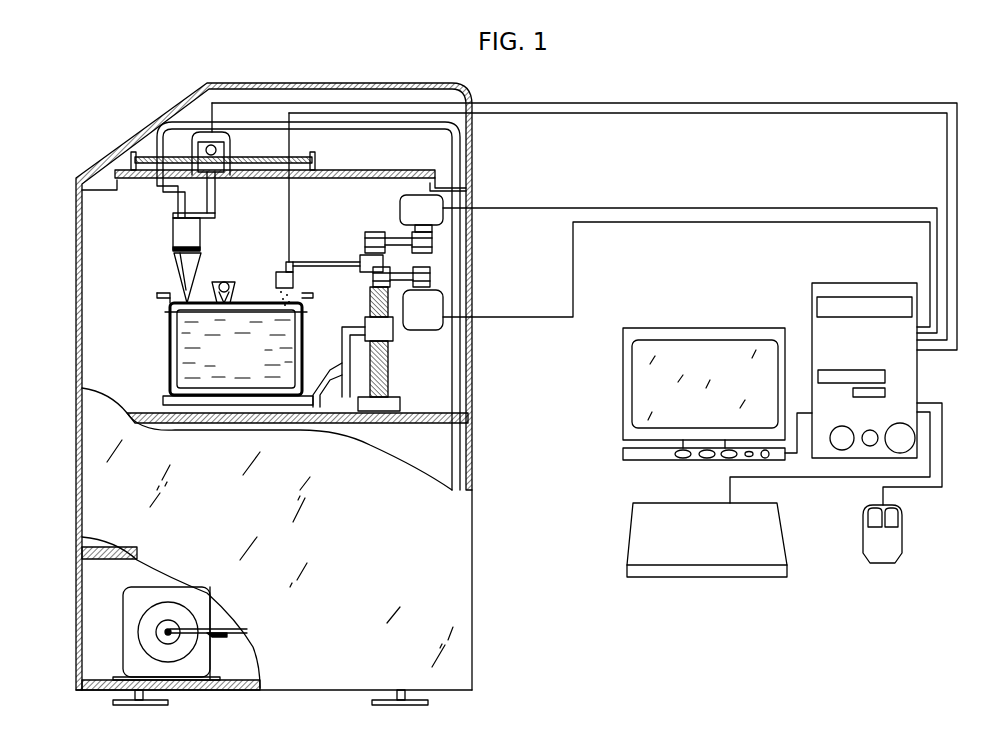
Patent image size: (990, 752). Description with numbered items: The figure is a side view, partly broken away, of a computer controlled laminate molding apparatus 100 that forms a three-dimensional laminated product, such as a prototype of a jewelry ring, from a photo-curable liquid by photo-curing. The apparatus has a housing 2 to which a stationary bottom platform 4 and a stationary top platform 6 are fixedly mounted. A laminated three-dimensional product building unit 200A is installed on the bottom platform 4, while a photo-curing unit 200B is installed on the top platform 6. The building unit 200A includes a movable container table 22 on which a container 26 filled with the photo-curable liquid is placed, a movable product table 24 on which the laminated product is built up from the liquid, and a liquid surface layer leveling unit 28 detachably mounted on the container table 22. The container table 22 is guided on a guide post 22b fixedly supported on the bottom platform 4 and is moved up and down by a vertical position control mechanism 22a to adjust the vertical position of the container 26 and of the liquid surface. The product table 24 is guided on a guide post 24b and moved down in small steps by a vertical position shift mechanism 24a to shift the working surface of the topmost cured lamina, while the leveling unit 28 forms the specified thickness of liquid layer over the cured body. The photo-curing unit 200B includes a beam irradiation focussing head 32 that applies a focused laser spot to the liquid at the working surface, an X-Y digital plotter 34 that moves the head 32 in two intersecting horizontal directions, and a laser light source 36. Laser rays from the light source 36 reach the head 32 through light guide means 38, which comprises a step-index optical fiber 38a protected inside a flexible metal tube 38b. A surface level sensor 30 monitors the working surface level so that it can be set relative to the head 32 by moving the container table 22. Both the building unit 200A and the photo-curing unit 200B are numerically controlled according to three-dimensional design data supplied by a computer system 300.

The housing 2 is at (455, 583).
The stationary bottom platform 4 is at (455, 425).
The stationary top platform 6 is at (392, 170).
The movable container table 22 is at (166, 398).
The vertical position control mechanism 22a is at (393, 340).
The guide post 22b is at (393, 388).
The movable product table 24 is at (250, 303).
The vertical position shift mechanism 24a is at (362, 258).
The guide post 24b is at (372, 287).
The container 26 is at (168, 305).
The liquid surface layer leveling unit 28 is at (222, 282).
The surface level sensor 30 is at (278, 272).
The beam irradiation focussing head 32 is at (201, 243).
The X-Y digital plotter 34 is at (222, 172).
The laser light source 36 is at (200, 597).
The light guide means 38 is at (242, 628).
The optical fiber 38a is at (232, 627).
The flexible metal tube 38b is at (240, 637).
The computer controlled laminate molding apparatus 100 is at (100, 125).
The laminated three-dimensional product building unit 200A is at (165, 325).
The photo-curing unit 200B is at (163, 220).
The computer system 300 is at (610, 462).